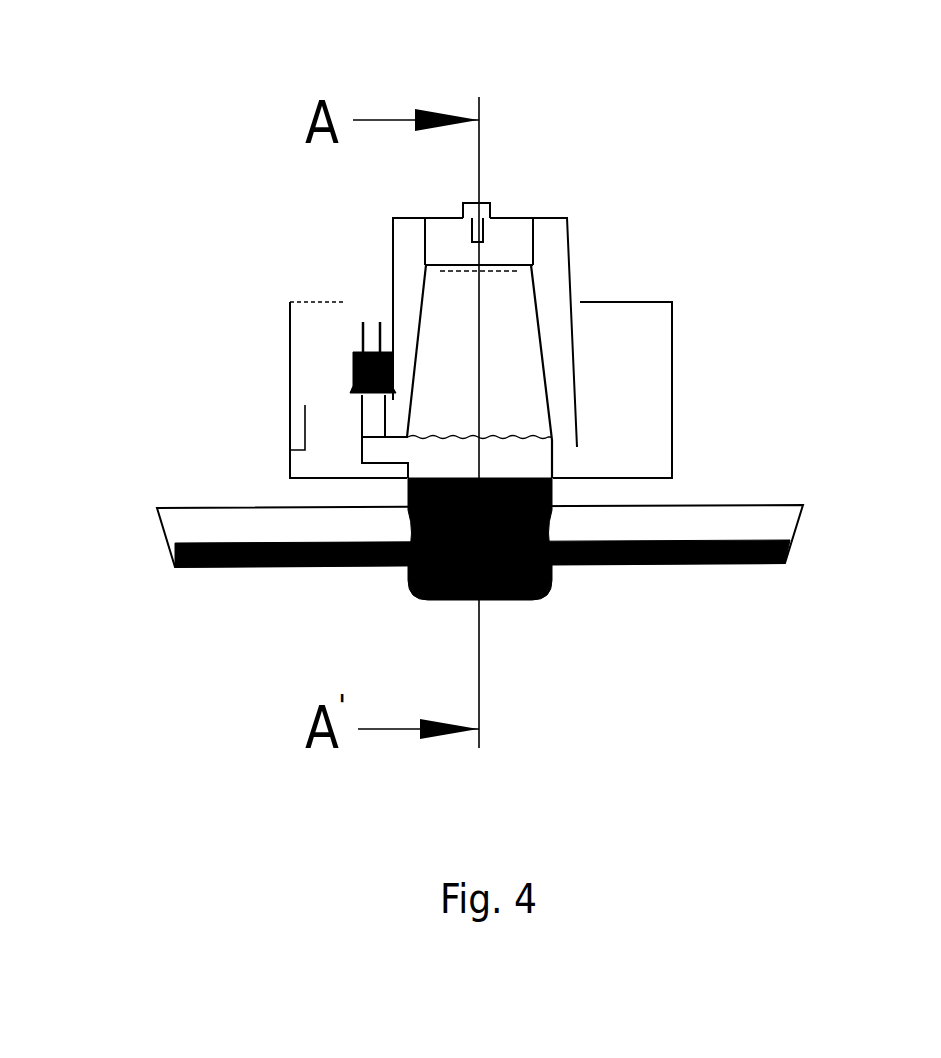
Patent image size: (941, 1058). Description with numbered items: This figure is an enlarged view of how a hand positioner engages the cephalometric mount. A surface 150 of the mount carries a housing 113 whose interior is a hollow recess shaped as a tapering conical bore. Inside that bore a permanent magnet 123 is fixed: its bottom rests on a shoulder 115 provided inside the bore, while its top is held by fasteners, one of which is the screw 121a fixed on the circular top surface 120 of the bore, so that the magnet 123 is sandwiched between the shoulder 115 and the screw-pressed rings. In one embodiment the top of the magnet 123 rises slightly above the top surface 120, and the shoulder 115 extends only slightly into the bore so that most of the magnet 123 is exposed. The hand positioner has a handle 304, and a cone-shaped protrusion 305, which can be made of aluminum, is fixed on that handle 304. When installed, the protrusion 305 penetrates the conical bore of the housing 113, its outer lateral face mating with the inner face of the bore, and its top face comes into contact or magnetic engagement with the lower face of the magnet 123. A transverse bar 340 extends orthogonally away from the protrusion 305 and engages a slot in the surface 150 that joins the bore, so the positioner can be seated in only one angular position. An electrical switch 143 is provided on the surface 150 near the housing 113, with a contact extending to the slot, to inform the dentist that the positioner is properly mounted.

The top surface 120 is at (402, 215).
The screw 121a is at (488, 203).
The permanent magnet 123 is at (508, 233).
The housing 113 is at (565, 252).
The shoulder 115 is at (515, 262).
The protrusion 305 is at (507, 352).
The electrical switch 143 is at (373, 410).
The transverse bar 340 is at (383, 449).
The surface 150 is at (653, 467).
The handle 304 is at (758, 562).